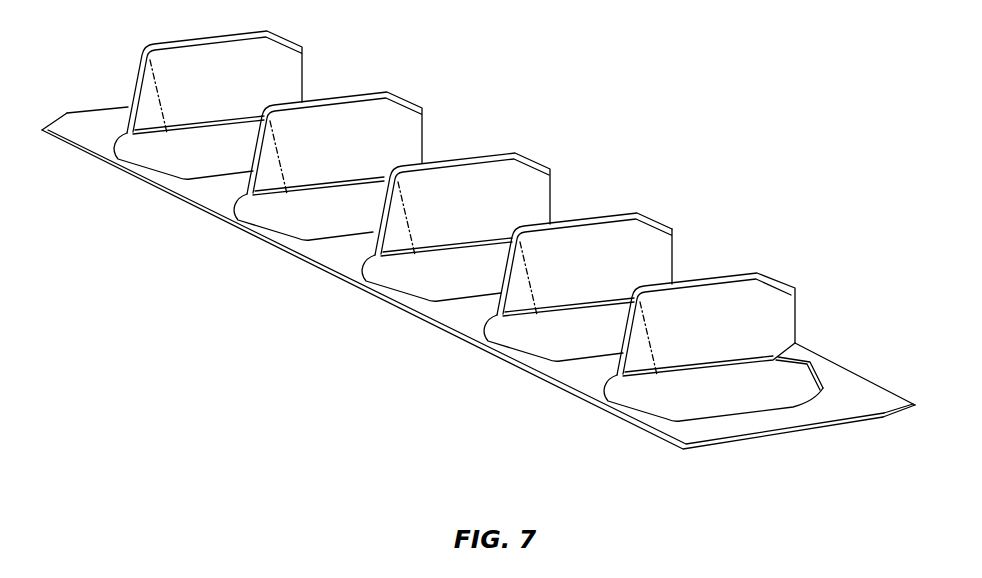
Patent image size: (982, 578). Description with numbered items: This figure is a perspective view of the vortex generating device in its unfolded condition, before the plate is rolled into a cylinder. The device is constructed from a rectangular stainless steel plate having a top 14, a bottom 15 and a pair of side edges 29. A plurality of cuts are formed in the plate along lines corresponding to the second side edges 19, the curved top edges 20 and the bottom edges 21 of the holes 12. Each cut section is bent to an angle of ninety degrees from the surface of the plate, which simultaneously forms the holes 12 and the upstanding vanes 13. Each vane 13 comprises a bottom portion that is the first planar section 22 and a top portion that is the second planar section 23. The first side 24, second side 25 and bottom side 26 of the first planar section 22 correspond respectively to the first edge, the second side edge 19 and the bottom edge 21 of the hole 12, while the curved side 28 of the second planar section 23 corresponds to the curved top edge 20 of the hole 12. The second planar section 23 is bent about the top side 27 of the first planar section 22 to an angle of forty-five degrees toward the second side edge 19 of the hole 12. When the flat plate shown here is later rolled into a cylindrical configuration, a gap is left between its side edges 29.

The hole 12 is at (433, 283).
The vane 13 is at (405, 91).
The top 14 is at (145, 180).
The bottom 15 is at (870, 378).
The second side edge 19 is at (208, 178).
The curved top edge 20 is at (280, 231).
The bottom edge 21 is at (813, 375).
The first planar section 22 is at (747, 305).
The second planar section 23 is at (636, 344).
The first side 24 is at (563, 313).
The second side 25 is at (602, 213).
The bottom side 26 is at (677, 267).
The top side 27 is at (497, 311).
The curved side 28 is at (372, 250).
The side edge 29 is at (87, 110).